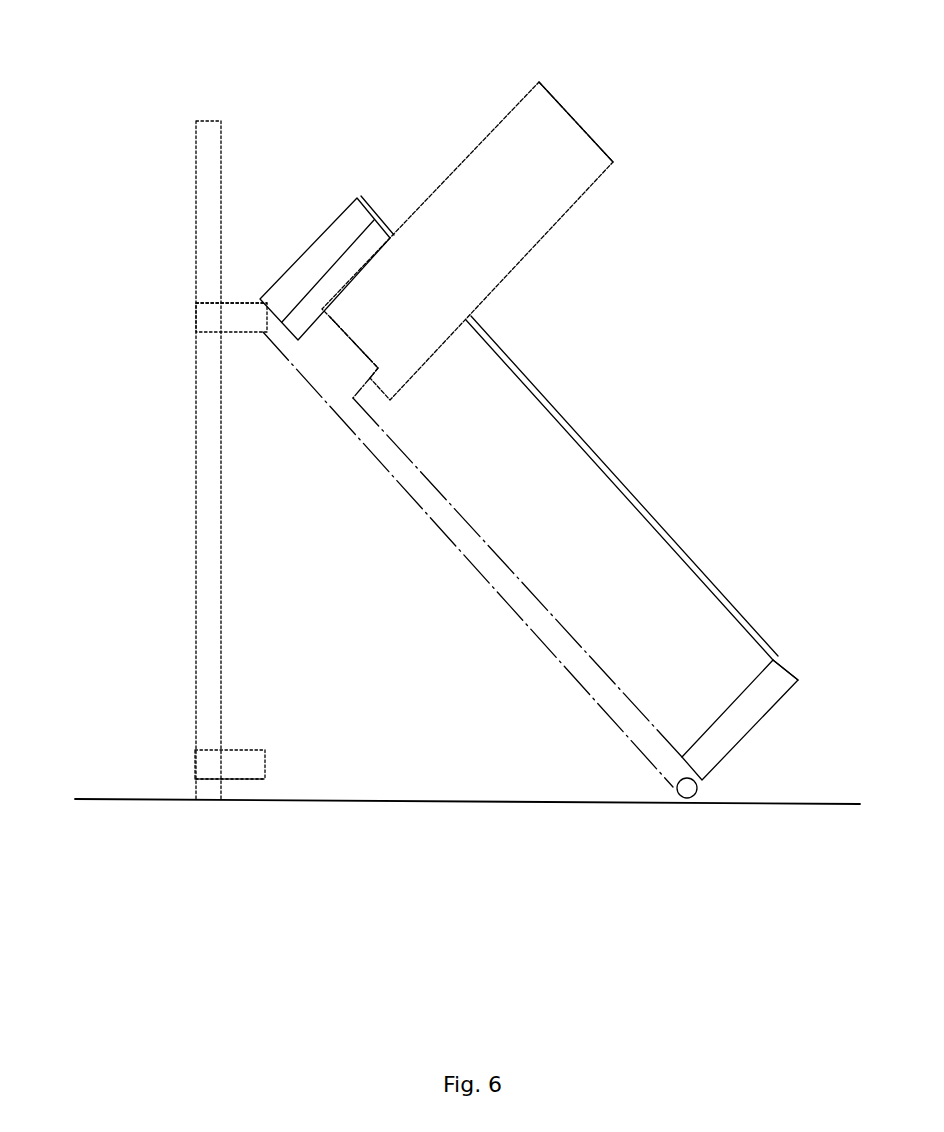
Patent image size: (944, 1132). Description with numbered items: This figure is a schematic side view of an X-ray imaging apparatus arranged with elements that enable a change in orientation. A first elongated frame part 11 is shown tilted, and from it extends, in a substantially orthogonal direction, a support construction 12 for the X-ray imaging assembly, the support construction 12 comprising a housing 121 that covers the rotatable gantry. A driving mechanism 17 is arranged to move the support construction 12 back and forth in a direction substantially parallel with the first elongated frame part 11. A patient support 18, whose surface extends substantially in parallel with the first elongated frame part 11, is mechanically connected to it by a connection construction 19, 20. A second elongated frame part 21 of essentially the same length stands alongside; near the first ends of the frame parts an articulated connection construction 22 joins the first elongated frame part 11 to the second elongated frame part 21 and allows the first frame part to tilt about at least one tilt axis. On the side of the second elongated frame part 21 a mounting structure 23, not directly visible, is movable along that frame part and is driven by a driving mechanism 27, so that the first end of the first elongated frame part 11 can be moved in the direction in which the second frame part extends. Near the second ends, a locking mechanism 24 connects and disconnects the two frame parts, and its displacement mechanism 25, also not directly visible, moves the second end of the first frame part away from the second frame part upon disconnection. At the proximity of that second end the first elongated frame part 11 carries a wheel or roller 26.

The first elongated frame part 11 is at (497, 593).
The support construction 12 is at (464, 119).
The housing 121 is at (556, 131).
The driving mechanism 17 is at (673, 731).
The patient support 18 is at (600, 467).
The connection construction 19 is at (356, 218).
The connection construction 20 is at (770, 692).
The second elongated frame part 21 is at (202, 414).
The articulated connection construction 22 is at (205, 324).
The mounting structure 23 is at (190, 297).
The locking mechanism 24 is at (183, 762).
The displacement mechanism 25 is at (183, 777).
The wheel or roller 26 is at (685, 798).
The driving mechanism 27 is at (157, 776).